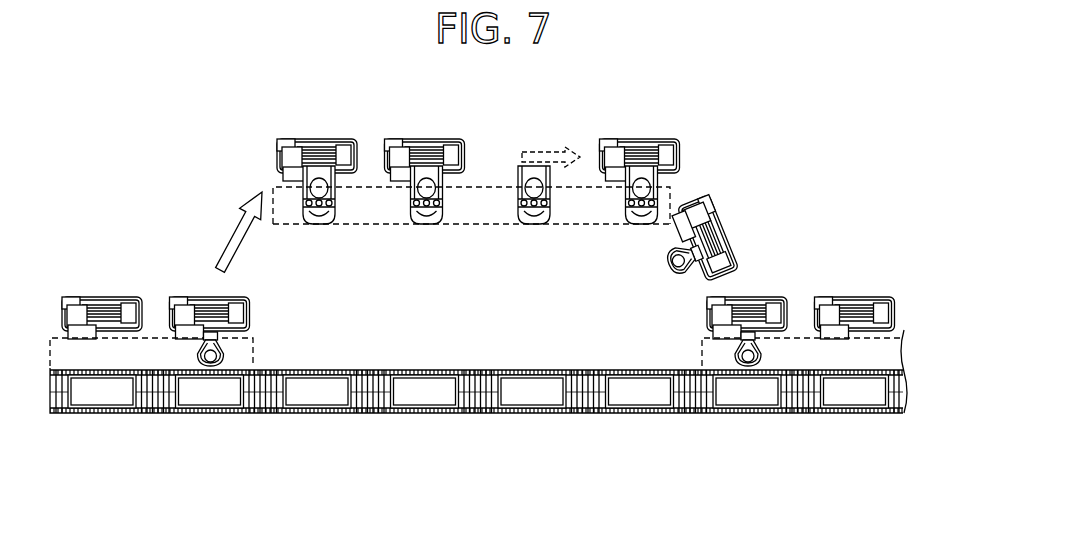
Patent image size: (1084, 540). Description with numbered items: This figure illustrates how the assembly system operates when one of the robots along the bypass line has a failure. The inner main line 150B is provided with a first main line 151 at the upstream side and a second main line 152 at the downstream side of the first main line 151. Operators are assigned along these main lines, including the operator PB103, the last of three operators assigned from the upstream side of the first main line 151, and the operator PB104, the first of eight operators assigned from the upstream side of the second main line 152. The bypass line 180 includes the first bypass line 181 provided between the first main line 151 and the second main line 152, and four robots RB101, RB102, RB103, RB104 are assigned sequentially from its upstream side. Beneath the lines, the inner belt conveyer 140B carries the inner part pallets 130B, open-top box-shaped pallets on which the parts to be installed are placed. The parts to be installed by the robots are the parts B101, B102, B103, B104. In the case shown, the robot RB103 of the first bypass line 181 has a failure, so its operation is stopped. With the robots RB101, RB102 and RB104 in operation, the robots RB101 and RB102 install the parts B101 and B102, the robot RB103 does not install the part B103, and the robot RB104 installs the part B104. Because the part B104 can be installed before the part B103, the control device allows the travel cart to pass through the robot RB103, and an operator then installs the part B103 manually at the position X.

The part B101 is at (321, 175).
The part B102 is at (428, 175).
The part B103 is at (718, 230).
The part B104 is at (644, 175).
The robot RB101 is at (335, 203).
The robot RB102 is at (444, 203).
The robot RB103 is at (550, 203).
The robot RB104 is at (626, 203).
The operator PB103 is at (186, 356).
The operator PB104 is at (768, 355).
The inner main line 150B is at (907, 343).
The first main line 151 is at (258, 352).
The second main line 152 is at (698, 352).
The inner part pallet 130B is at (238, 383).
The inner belt conveyer 140B is at (481, 382).
The bypass line 180 is at (379, 237).
The first bypass line 181 is at (494, 226).
The position X is at (660, 279).